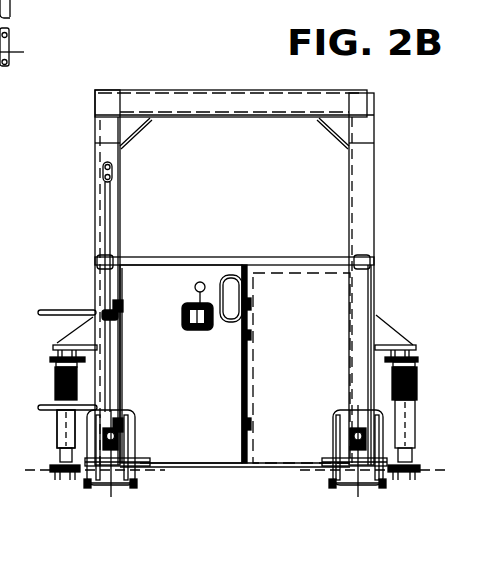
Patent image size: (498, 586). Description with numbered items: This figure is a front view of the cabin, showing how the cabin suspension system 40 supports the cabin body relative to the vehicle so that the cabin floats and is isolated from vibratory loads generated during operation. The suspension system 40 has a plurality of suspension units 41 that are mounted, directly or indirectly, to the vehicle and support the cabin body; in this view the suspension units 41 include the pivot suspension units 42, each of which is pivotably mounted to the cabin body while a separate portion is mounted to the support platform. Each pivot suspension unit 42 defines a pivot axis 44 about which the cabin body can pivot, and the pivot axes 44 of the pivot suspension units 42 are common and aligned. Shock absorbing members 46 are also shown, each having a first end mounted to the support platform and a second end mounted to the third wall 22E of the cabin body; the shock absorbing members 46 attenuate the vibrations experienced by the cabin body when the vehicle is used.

The third wall 22E is at (377, 293).
The cabin suspension system 40 is at (71, 497).
The suspension units 41 is at (389, 498).
The pivot suspension unit 42 is at (141, 474).
The pivot axis 44 is at (17, 53).
The shock absorbing member 46 is at (55, 383).